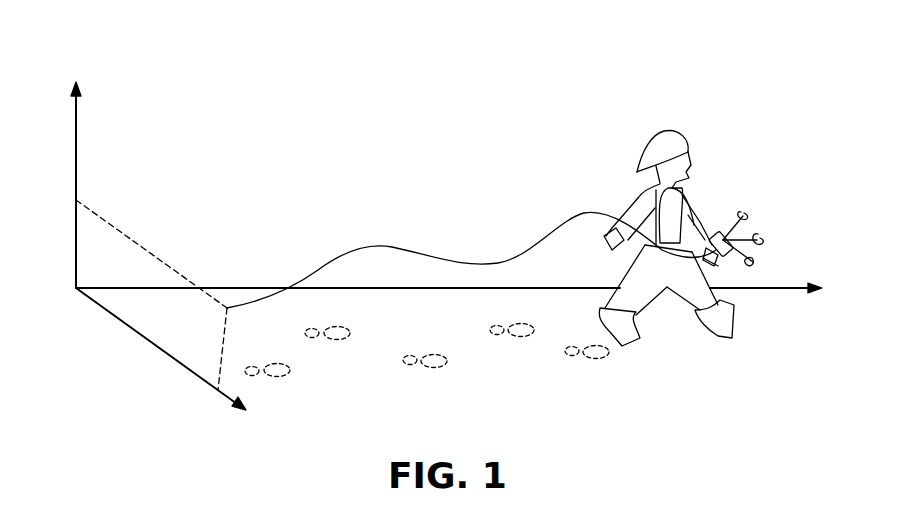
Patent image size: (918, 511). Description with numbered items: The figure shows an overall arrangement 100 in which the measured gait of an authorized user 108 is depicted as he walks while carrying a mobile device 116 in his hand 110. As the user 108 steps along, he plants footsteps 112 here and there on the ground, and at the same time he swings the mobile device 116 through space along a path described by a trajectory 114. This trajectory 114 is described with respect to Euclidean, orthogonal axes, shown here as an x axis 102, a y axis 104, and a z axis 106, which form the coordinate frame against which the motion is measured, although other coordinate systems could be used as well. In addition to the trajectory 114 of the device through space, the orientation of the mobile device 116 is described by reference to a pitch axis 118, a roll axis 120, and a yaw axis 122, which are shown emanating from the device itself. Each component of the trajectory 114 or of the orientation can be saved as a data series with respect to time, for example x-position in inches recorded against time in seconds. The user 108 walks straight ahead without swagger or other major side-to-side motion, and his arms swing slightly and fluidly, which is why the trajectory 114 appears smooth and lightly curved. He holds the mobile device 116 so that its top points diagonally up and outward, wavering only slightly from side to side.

The system environment 100 is at (300, 62).
The x axis 102 is at (790, 292).
The y axis 104 is at (74, 165).
The z axis 106 is at (168, 358).
The authorized user 108 is at (688, 140).
The hand 110 is at (712, 246).
The footsteps 112 is at (515, 335).
The trajectory 114 is at (397, 246).
The mobile device 116 is at (728, 258).
The pitch axis 118 is at (762, 264).
The roll axis 120 is at (765, 246).
The yaw axis 122 is at (758, 222).